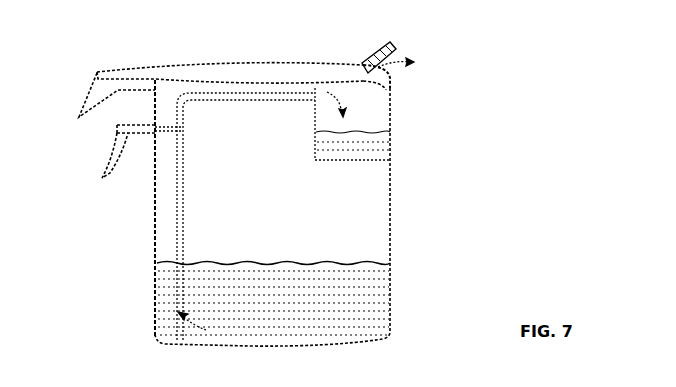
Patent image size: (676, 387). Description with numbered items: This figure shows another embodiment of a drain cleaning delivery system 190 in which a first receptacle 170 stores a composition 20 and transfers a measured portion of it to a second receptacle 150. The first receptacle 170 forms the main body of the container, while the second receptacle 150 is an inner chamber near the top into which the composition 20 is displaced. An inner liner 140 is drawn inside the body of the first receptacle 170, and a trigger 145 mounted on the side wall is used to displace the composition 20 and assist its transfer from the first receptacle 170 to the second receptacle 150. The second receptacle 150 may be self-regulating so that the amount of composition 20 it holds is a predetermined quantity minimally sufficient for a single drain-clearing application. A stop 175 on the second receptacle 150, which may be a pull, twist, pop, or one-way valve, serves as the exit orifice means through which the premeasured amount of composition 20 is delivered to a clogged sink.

The drain cleaning delivery system 190 is at (148, 49).
The first receptacle 170 is at (244, 62).
The stop 175 is at (400, 27).
The second receptacle 150 is at (383, 106).
The inner liner 140 is at (178, 243).
The trigger 145 is at (108, 158).
The composition 20 is at (392, 143).